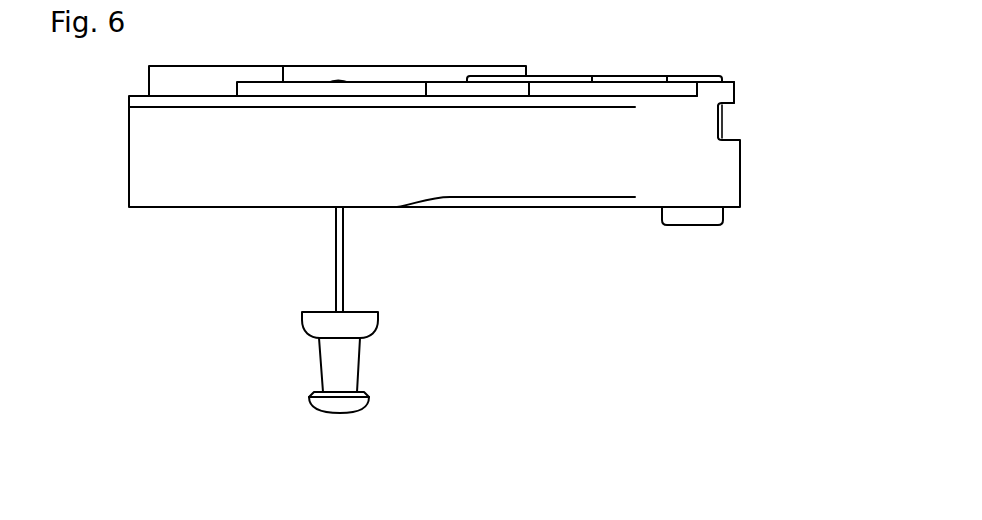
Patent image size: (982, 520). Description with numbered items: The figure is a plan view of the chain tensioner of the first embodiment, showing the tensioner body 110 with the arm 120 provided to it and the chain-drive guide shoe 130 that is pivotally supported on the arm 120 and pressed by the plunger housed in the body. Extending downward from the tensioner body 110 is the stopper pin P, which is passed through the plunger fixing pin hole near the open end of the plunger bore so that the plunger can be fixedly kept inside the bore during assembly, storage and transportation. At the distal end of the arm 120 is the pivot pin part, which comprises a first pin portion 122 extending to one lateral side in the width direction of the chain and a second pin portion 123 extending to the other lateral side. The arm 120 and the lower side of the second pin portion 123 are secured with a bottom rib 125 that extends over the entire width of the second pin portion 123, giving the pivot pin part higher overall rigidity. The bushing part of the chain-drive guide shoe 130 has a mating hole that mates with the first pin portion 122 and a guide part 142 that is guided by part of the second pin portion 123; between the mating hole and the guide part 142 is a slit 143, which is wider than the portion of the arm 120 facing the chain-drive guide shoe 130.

The tensioner body 110 is at (332, 66).
The arm 120 is at (560, 76).
The bottom rib 125 is at (633, 78).
The second pin portion 123 is at (693, 77).
The guide part 142 is at (725, 93).
The slit 143 is at (737, 128).
The chain-drive guide shoe 130 is at (249, 207).
The first pin portion 122 is at (691, 217).
The stopper pin P is at (343, 245).